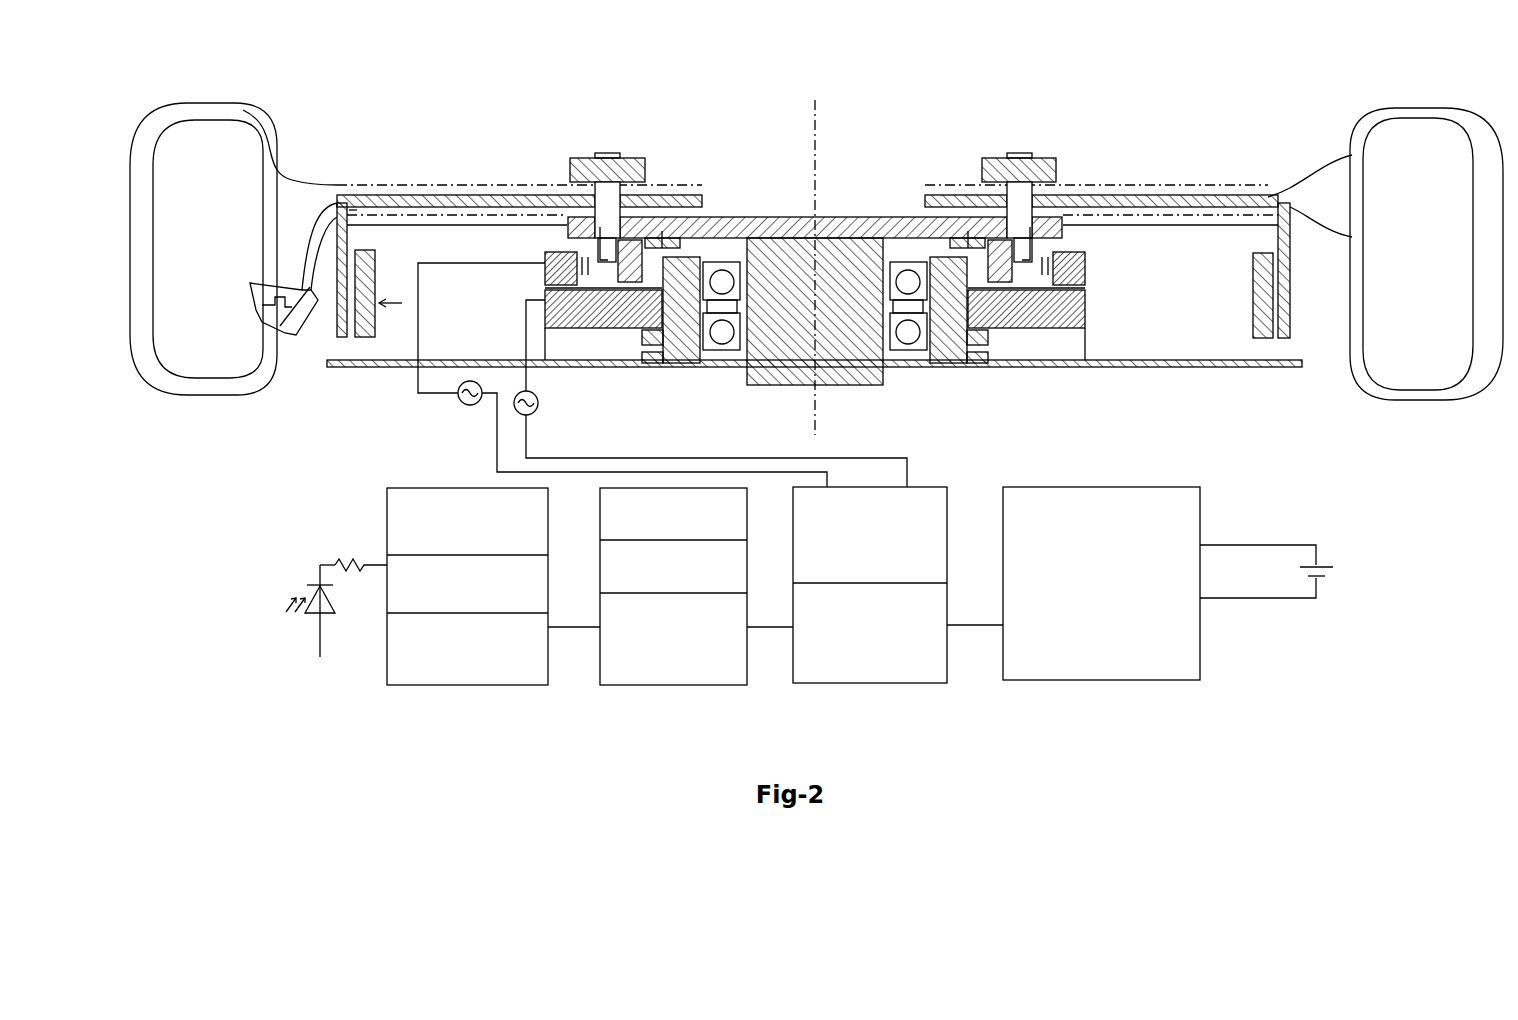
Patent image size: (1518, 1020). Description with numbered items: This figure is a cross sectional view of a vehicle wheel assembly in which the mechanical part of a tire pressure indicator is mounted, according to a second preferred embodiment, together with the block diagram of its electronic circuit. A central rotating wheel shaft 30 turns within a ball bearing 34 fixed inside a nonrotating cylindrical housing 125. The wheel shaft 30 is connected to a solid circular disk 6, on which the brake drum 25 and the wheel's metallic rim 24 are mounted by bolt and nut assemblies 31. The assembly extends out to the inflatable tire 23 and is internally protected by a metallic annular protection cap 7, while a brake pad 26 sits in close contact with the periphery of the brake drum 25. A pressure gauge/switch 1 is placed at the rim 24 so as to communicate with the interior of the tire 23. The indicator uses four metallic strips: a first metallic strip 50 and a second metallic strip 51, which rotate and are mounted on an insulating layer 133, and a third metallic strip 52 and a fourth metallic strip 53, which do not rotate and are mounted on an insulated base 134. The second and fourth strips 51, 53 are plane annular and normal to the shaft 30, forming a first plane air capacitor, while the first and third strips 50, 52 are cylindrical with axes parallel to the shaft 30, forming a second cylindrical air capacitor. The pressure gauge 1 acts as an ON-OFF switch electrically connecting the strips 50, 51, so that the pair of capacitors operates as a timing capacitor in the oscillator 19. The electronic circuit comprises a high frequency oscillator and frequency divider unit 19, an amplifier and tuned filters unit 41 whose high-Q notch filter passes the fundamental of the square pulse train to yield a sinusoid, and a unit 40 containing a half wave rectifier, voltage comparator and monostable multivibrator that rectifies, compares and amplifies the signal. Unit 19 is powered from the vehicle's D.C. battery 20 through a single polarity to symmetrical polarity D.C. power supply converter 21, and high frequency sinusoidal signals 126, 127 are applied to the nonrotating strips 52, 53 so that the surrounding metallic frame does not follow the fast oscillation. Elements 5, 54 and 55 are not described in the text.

The pressure gauge/switch 1 is at (290, 342).
The light emitting diode indicator 5 is at (333, 615).
The solid circular disk 6 is at (840, 217).
The metallic annular protection cap 7 is at (613, 367).
The high frequency oscillator and frequency divider unit 19 is at (884, 684).
The D.C. battery 20 is at (1322, 573).
The single polarity D.C. power supply to symmetrical polarity D.C. power supply conv 21 is at (1114, 681).
The inflatable tire 23 is at (173, 120).
The metallic rim 24 is at (283, 178).
The brake drum 25 is at (453, 196).
The brake pad 26 is at (368, 340).
The central rotating wheel shaft 30 is at (833, 386).
The bolt and nut assemblies 31 is at (603, 153).
The ball bearing 34 is at (720, 262).
The half wave rectifier, voltage comparator and monostable multivibrator unit 40 is at (470, 686).
The amplifier and tuned filters unit 41 is at (683, 686).
The first metallic strip 50 is at (612, 282).
The second metallic strip 51 is at (598, 287).
The third metallic strip 52 is at (560, 264).
The fourth metallic strip 53 is at (605, 300).
The armature plate 54 is at (393, 216).
The inner wall plate 55 is at (357, 226).
The cylindrical housing 125 is at (677, 335).
The high frequency sinusoidal signal 126 is at (461, 400).
The high frequency sinusoidal signal 127 is at (533, 411).
The insulating layer 133 is at (630, 255).
The insulated base 134 is at (607, 322).